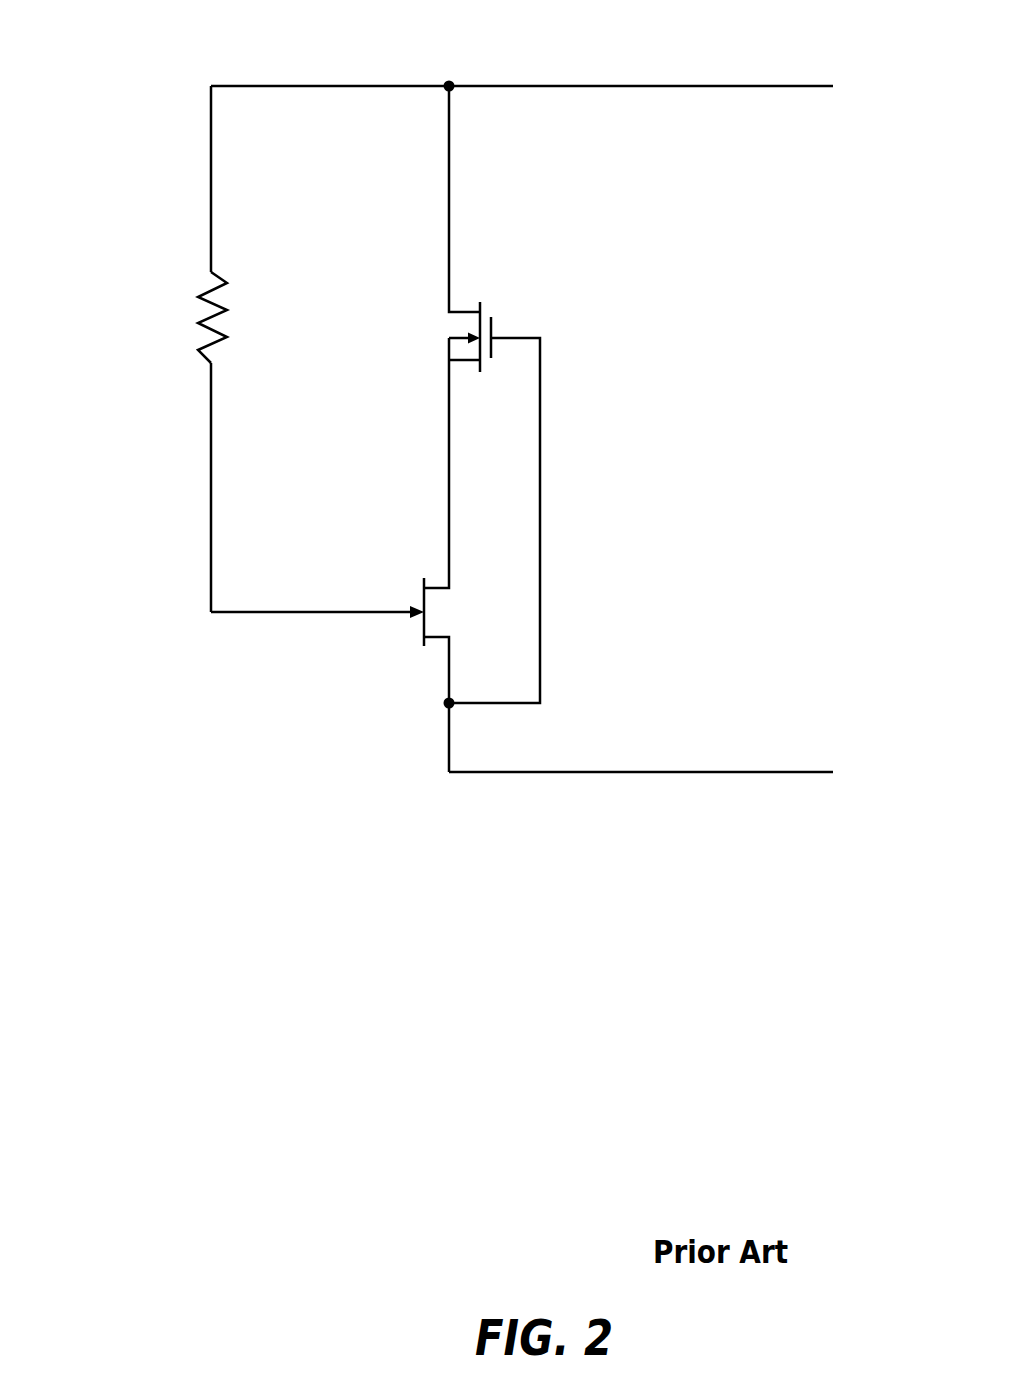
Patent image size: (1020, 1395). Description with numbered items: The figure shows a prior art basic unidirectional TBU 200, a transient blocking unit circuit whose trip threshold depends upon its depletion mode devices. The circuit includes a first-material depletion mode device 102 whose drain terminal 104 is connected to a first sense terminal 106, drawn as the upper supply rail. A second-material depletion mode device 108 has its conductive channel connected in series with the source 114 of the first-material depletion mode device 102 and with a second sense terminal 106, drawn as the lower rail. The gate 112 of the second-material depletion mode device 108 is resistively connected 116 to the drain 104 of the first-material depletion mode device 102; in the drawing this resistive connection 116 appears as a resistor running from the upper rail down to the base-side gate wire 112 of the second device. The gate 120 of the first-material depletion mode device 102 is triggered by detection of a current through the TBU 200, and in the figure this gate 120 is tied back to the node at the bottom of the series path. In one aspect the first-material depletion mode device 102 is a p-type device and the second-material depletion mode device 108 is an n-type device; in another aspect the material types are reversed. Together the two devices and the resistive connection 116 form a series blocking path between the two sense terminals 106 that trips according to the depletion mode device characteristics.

The unidirectional TBU 200 is at (125, 65).
The sense terminal 106 is at (540, 85).
The drain terminal 104 is at (458, 308).
The first-material depletion mode device 102 is at (522, 292).
The gate 120 is at (511, 338).
The source 114 is at (460, 362).
The resistive connection 116 is at (229, 302).
The second-material depletion mode device 108 is at (393, 557).
The gate 112 is at (405, 614).